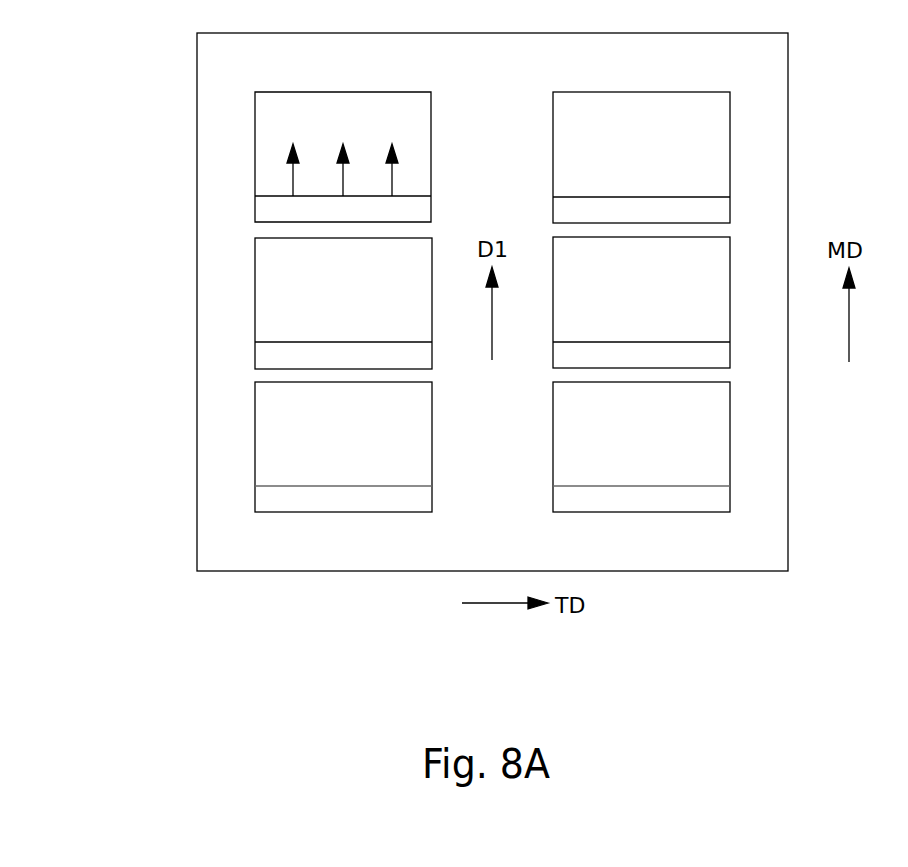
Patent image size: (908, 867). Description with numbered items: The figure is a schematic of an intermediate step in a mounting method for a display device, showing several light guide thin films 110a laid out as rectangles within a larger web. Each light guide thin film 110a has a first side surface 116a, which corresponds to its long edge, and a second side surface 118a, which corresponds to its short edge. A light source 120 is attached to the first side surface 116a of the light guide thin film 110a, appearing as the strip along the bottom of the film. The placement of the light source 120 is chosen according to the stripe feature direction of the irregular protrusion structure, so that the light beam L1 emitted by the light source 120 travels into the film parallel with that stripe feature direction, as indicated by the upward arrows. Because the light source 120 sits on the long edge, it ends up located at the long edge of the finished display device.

The light guide thin film 110a is at (295, 160).
The second side surface 118a is at (295, 145).
The first side surface 116a is at (277, 196).
The light source 120 is at (273, 210).
The light beam L1 is at (393, 183).